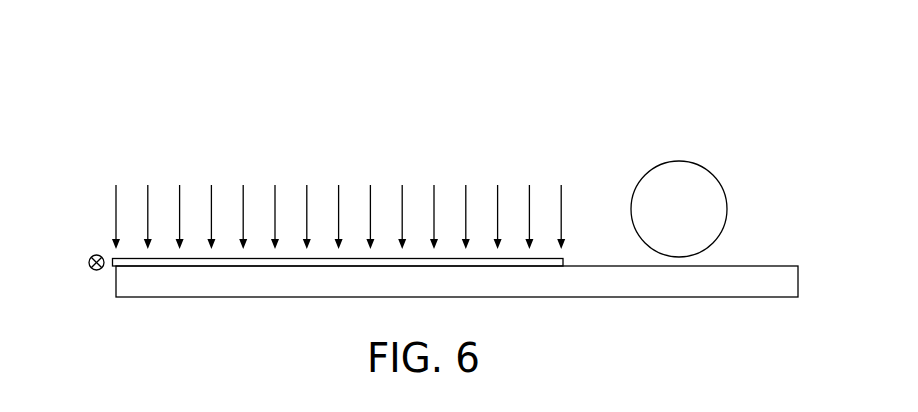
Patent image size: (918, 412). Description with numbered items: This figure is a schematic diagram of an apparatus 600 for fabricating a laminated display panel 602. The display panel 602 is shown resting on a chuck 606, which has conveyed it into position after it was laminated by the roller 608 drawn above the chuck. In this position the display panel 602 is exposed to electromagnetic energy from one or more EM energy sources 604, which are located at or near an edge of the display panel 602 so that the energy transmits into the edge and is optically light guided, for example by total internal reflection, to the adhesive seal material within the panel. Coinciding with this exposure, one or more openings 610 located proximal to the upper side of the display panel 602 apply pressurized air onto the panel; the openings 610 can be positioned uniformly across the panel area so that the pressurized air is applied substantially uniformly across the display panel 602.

The apparatus 600 is at (683, 73).
The laminated display panel 602 is at (547, 265).
The EM energy source 604 is at (93, 270).
The chuck 606 is at (708, 292).
The roller 608 is at (667, 162).
The openings 610 is at (466, 186).